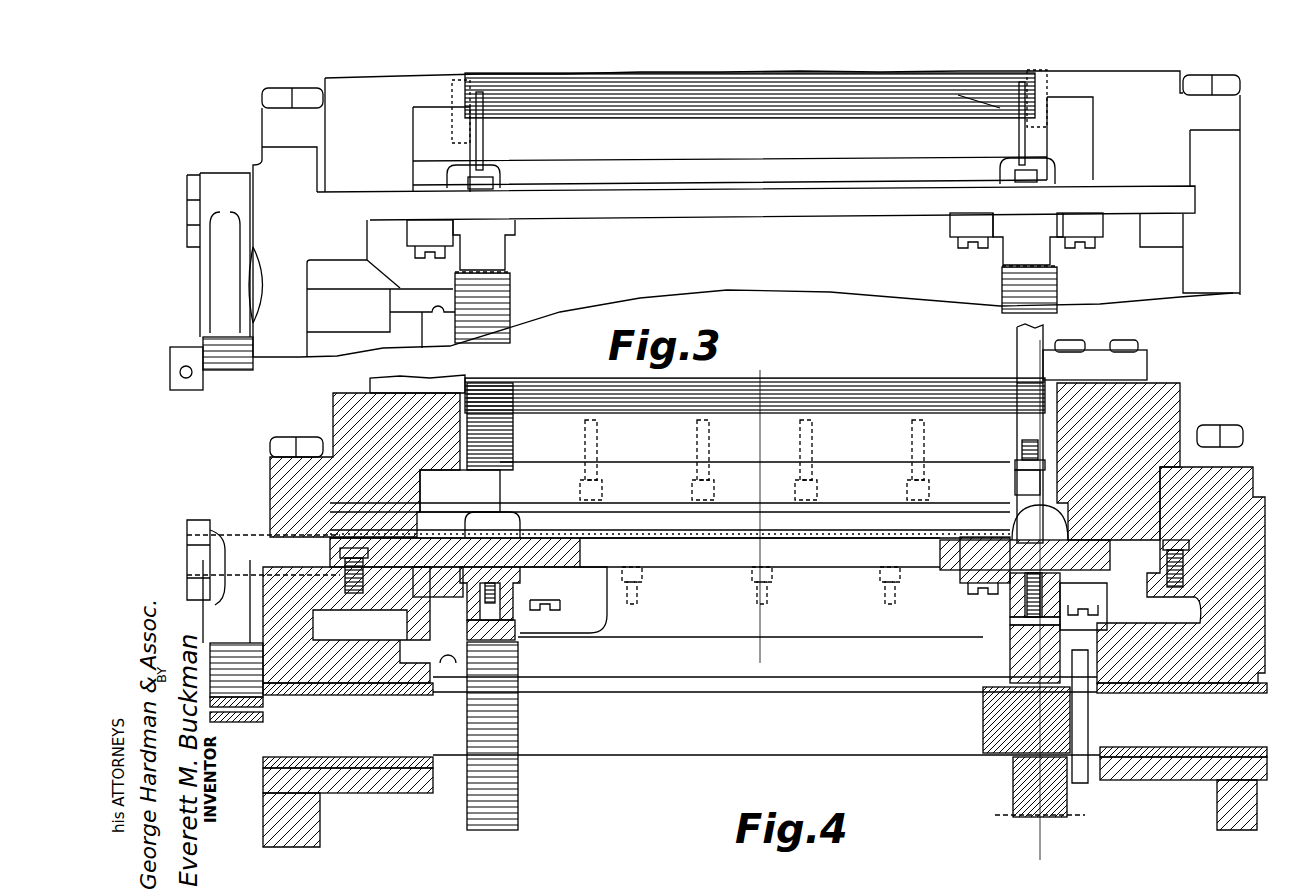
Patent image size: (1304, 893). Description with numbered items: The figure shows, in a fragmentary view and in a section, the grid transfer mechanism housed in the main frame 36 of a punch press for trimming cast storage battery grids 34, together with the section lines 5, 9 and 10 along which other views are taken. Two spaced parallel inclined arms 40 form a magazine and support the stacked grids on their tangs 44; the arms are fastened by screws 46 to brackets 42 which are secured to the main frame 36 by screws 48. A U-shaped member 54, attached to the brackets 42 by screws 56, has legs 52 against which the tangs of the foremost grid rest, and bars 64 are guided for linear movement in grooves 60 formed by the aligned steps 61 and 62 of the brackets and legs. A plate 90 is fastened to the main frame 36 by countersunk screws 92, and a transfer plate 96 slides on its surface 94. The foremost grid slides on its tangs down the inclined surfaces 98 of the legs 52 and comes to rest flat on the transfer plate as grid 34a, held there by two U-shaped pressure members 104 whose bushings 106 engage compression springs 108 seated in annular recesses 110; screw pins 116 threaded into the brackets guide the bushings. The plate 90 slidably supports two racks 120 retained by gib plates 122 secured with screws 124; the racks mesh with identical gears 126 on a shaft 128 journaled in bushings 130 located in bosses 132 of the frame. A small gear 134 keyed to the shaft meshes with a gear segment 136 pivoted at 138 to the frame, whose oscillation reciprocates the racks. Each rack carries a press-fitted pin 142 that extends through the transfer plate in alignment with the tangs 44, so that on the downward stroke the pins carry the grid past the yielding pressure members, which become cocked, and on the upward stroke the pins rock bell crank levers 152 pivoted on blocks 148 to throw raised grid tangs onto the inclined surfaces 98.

In FIG. 4, the section line 5- 5 is at (1028, 356).
In FIG. 4, the section line 9- 9 is at (222, 470).
In FIG. 4, the section line 10- 10 is at (760, 370).
In FIG. 3, the cast storage battery grid 34 is at (666, 93).
In FIG. 4, the cast storage battery grid 34 is at (895, 385).
In FIG. 3, the grid in transfer position 34a is at (680, 178).
In FIG. 4, the grid in transfer position 34a is at (843, 530).
In FIG. 3, the main frame 36 is at (1222, 270).
In FIG. 4, the main frame 36 is at (288, 830).
In FIG. 4, the grid supporting arm 40 is at (370, 387).
In FIG. 3, the bracket 42 is at (1228, 116).
In FIG. 4, the bracket 42 is at (350, 423).
In FIG. 3, the tang 44 is at (505, 180).
In FIG. 4, the tang 44 is at (500, 400).
In FIG. 4, the screw 46 is at (1115, 348).
In FIG. 3, the screw 48 is at (1222, 84).
In FIG. 4, the screw 48 is at (290, 447).
In FIG. 3, the leg of U-shaped member 52 is at (413, 150).
In FIG. 4, the leg of U-shaped member 52 is at (503, 490).
In FIG. 3, the U-shaped member 54 is at (790, 152).
In FIG. 4, the U-shaped member 54 is at (780, 500).
In FIG. 4, the screw 56 is at (1180, 388).
In FIG. 4, the groove 60 is at (1088, 397).
In FIG. 4, the step of bracket 61 is at (1022, 450).
In FIG. 4, the step of leg 62 is at (1015, 478).
In FIG. 4, the bar 64 is at (1015, 452).
In FIG. 3, the plate 90 is at (1158, 204).
In FIG. 4, the plate 90 is at (1133, 555).
In FIG. 4, the countersunk screw 92 is at (345, 553).
In FIG. 4, the surface of plate 94 is at (720, 547).
In FIG. 3, the transfer plate 96 is at (832, 195).
In FIG. 4, the transfer plate 96 is at (680, 547).
In FIG. 4, the inclined surface 98 is at (470, 488).
In FIG. 3, the pressure member 104 is at (485, 175).
In FIG. 4, the pressure member 104 is at (572, 508).
In FIG. 4, the bushing 106 is at (1050, 492).
In FIG. 4, the compression spring 108 is at (1060, 440).
In FIG. 4, the annular recess 110 is at (1052, 508).
In FIG. 4, the screw pin 116 is at (1020, 415).
In FIG. 3, the rack 120 is at (492, 264).
In FIG. 4, the rack 120 is at (505, 612).
In FIG. 3, the gib plate 122 is at (420, 232).
In FIG. 4, the gib plate 122 is at (585, 600).
In FIG. 3, the screw 124 is at (440, 258).
In FIG. 4, the screw 124 is at (420, 604).
In FIG. 3, the gear 126 is at (1010, 295).
In FIG. 4, the gear 126 is at (498, 832).
In FIG. 4, the shaft 128 is at (612, 756).
In FIG. 4, the bushing 130 is at (358, 690).
In FIG. 4, the boss 132 is at (357, 788).
In FIG. 3, the small gear 134 is at (225, 352).
In FIG. 4, the small gear 134 is at (245, 765).
In FIG. 3, the gear segment 136 is at (215, 310).
In FIG. 4, the gear segment 136 is at (225, 650).
In FIG. 3, the pivot 138 is at (187, 224).
In FIG. 4, the pivot 138 is at (187, 553).
In FIG. 3, the pin 142 is at (1030, 180).
In FIG. 4, the pin 142 is at (535, 538).
In FIG. 3, the block 148 is at (455, 97).
In FIG. 3, the bell crank lever 152 is at (478, 150).